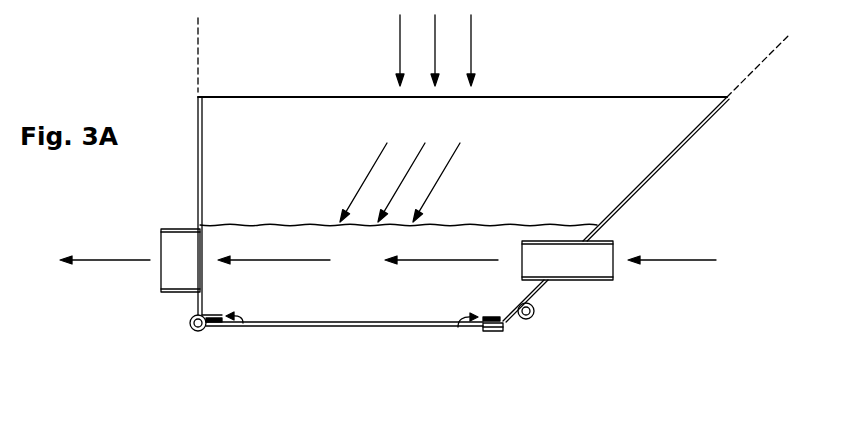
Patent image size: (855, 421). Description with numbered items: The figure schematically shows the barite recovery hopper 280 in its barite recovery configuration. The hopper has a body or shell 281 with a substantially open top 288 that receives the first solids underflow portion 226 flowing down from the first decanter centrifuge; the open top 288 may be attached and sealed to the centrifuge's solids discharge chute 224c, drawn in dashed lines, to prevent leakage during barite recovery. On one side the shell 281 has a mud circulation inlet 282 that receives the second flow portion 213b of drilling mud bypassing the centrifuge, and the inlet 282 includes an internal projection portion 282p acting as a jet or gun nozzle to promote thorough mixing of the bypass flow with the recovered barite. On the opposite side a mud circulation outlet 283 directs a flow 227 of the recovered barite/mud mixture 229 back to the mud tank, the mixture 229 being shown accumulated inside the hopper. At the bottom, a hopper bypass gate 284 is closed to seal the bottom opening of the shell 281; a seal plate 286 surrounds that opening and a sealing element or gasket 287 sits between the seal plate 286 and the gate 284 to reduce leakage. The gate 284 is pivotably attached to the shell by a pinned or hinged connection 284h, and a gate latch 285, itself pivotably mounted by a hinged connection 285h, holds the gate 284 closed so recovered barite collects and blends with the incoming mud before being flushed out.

The barite recovery hopper 280 is at (182, 66).
The first solids underflow portion 226 is at (471, 38).
The solids discharge chute 224c is at (762, 62).
The open top 288 is at (610, 96).
The shell 281 is at (697, 127).
The mud circulation outlet 283 is at (180, 228).
The internal projection portion 282p is at (548, 240).
The second flow portion 213b is at (680, 260).
The flow of recovered barite/mud mixture 227 is at (100, 262).
The recovered barite/mud mixture 229 is at (379, 305).
The seal plate 286 is at (206, 317).
The hopper bypass gate 284 is at (355, 326).
The pinned or hinged connection 284h is at (192, 332).
The sealing element or gasket 287 is at (243, 323).
The gate latch 285 is at (505, 333).
The pinned or hinged connection 285h is at (530, 318).
The mud circulation inlet 282 is at (585, 281).